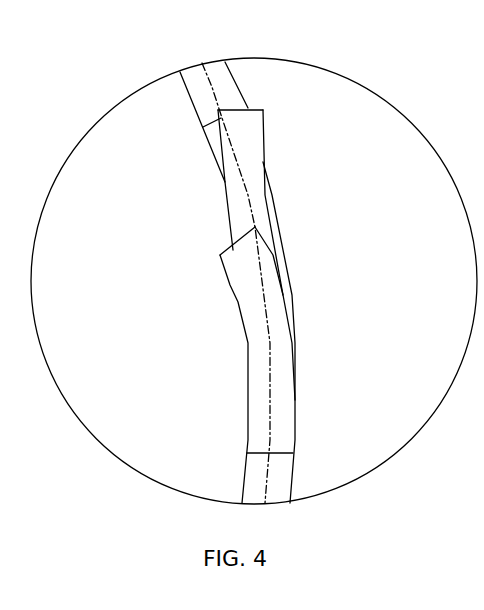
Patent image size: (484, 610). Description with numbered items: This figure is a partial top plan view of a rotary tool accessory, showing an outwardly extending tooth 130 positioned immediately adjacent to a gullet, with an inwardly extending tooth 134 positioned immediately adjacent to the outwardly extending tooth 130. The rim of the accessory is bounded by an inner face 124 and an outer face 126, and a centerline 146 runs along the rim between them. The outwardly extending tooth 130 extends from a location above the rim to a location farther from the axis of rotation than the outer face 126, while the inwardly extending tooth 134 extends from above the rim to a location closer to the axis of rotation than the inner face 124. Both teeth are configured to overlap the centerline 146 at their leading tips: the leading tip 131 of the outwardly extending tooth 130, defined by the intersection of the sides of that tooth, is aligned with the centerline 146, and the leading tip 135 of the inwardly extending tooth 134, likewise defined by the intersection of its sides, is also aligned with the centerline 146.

The inner face 124 is at (185, 83).
The outer face 126 is at (292, 468).
The outwardly extending tooth 130 is at (265, 132).
The leading tip 131 is at (218, 110).
The inwardly extending tooth 134 is at (238, 298).
The leading tip 135 is at (255, 223).
The centerline 146 is at (212, 87).